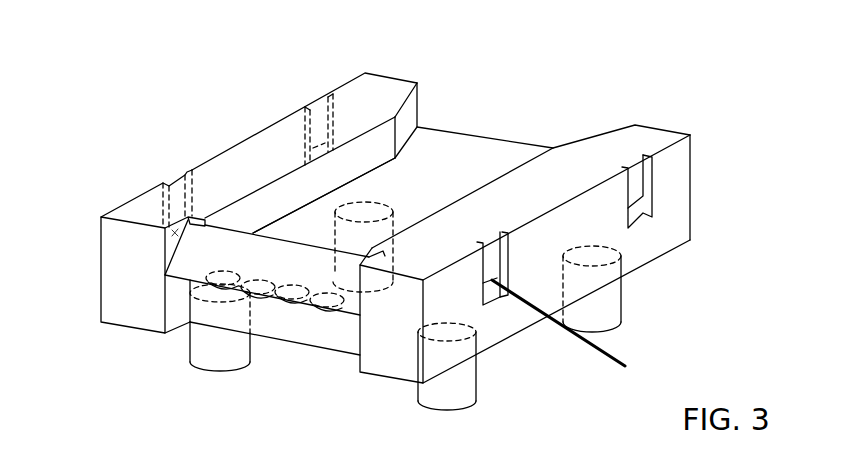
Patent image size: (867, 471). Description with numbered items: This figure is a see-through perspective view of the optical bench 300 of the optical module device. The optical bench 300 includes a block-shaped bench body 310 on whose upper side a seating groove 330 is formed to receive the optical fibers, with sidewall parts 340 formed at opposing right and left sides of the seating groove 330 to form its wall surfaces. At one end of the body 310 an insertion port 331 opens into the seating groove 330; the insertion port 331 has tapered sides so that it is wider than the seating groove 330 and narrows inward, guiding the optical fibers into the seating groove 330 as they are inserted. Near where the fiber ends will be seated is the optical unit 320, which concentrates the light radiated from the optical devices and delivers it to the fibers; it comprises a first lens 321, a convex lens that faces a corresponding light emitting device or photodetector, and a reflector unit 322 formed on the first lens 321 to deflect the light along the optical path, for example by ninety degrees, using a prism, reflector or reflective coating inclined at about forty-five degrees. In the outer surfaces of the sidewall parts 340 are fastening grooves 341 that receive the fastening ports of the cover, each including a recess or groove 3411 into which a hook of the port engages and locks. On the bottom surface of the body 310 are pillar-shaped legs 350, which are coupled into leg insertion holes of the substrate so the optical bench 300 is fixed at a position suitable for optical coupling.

The optical bench 300 is at (97, 57).
The bench body 310 is at (100, 243).
The optical unit 320 is at (277, 298).
The first lens 321 is at (318, 313).
The reflector unit 322 is at (197, 252).
The seating groove 330 is at (406, 199).
The insertion port 331 is at (418, 107).
The sidewall part 340 is at (277, 143).
The fastening groove 341 is at (497, 262).
The groove 3411 is at (625, 366).
The leg 350 is at (463, 383).